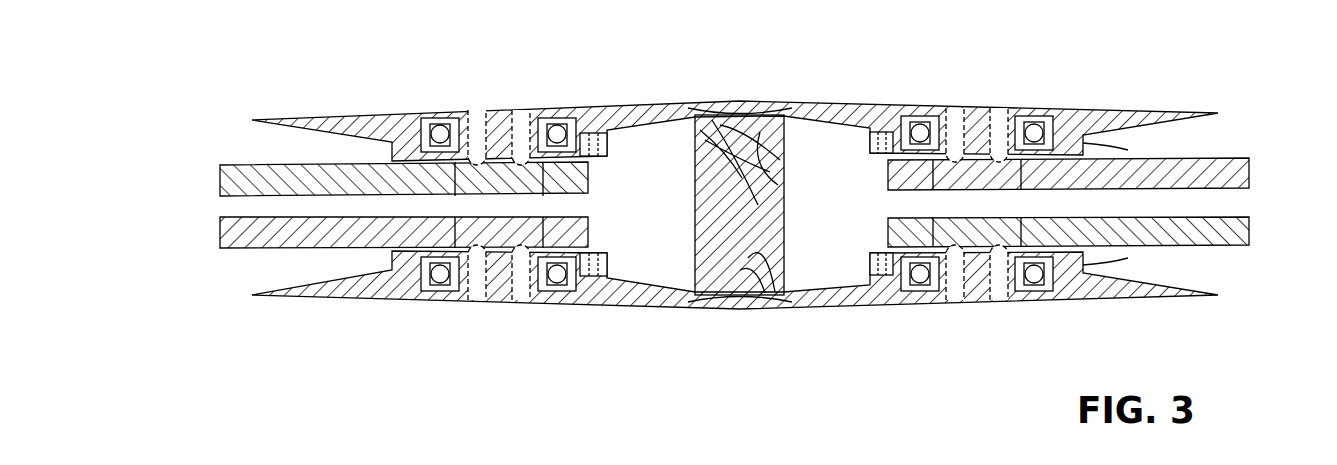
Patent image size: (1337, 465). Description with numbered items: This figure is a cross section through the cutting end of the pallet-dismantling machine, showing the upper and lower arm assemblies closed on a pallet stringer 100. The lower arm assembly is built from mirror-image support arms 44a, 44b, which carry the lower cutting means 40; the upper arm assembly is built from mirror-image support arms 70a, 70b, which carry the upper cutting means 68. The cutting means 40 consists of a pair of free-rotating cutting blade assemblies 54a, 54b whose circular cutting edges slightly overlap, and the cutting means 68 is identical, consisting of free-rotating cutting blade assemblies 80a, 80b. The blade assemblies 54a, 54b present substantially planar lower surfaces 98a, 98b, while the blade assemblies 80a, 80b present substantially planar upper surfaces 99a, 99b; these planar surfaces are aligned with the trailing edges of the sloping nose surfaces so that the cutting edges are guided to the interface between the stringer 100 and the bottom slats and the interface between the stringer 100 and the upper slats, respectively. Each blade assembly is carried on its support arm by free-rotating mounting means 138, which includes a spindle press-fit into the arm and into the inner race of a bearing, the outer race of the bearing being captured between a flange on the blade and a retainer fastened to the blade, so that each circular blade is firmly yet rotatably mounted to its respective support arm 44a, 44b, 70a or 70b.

The cutting means 40 is at (1183, 298).
The upper cutting means 68 is at (1132, 104).
The support arm 44a is at (255, 249).
The support arm 44b is at (1222, 246).
The support arm 70a is at (252, 165).
The support arm 70b is at (1217, 157).
The stringer 100 is at (785, 187).
The free-rotating mounting means 138 is at (601, 156).
The planar upper surface 99a is at (442, 110).
The planar upper surface 99b is at (840, 101).
The cutting blade assembly 80a is at (517, 108).
The cutting blade assembly 80b is at (1000, 103).
The planar lower surface 98a is at (450, 303).
The planar lower surface 98b is at (927, 303).
The cutting blade assembly 54a is at (508, 303).
The cutting blade assembly 54b is at (960, 303).